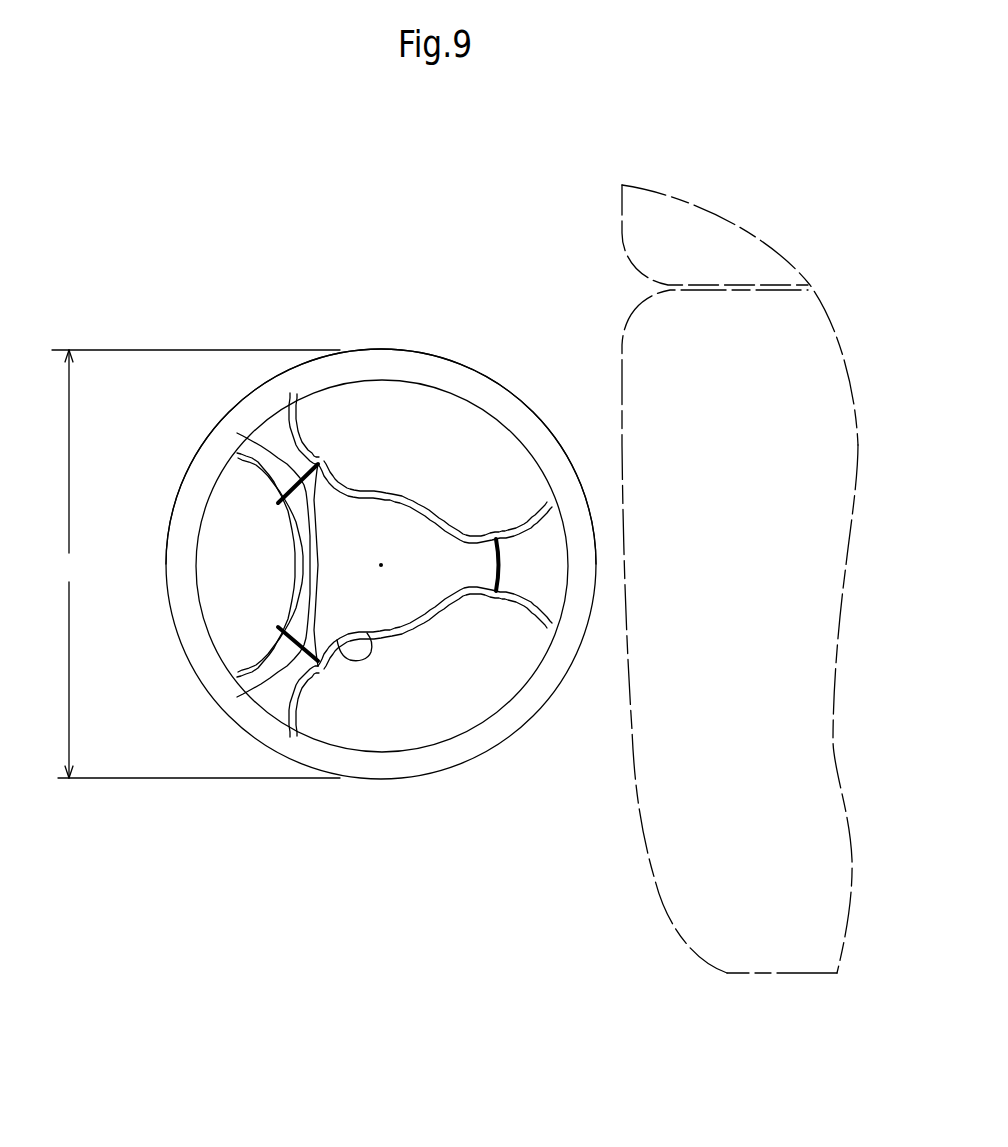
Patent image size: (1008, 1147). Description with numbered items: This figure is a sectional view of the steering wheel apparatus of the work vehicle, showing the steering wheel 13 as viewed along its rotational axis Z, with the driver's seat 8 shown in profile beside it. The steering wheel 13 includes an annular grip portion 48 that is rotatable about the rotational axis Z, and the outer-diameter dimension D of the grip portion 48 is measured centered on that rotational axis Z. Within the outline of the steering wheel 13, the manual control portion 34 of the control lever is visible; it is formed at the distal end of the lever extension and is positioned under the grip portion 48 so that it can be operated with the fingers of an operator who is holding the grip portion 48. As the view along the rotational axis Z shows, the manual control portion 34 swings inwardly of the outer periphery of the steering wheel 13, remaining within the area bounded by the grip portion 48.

The steering wheel 13 is at (480, 370).
The grip portion 48 is at (448, 761).
The manual control portion 34 is at (369, 661).
The driver's seat 8 is at (635, 802).
The rotational axis Z is at (381, 565).
The outer-diameter dimension D is at (196, 564).